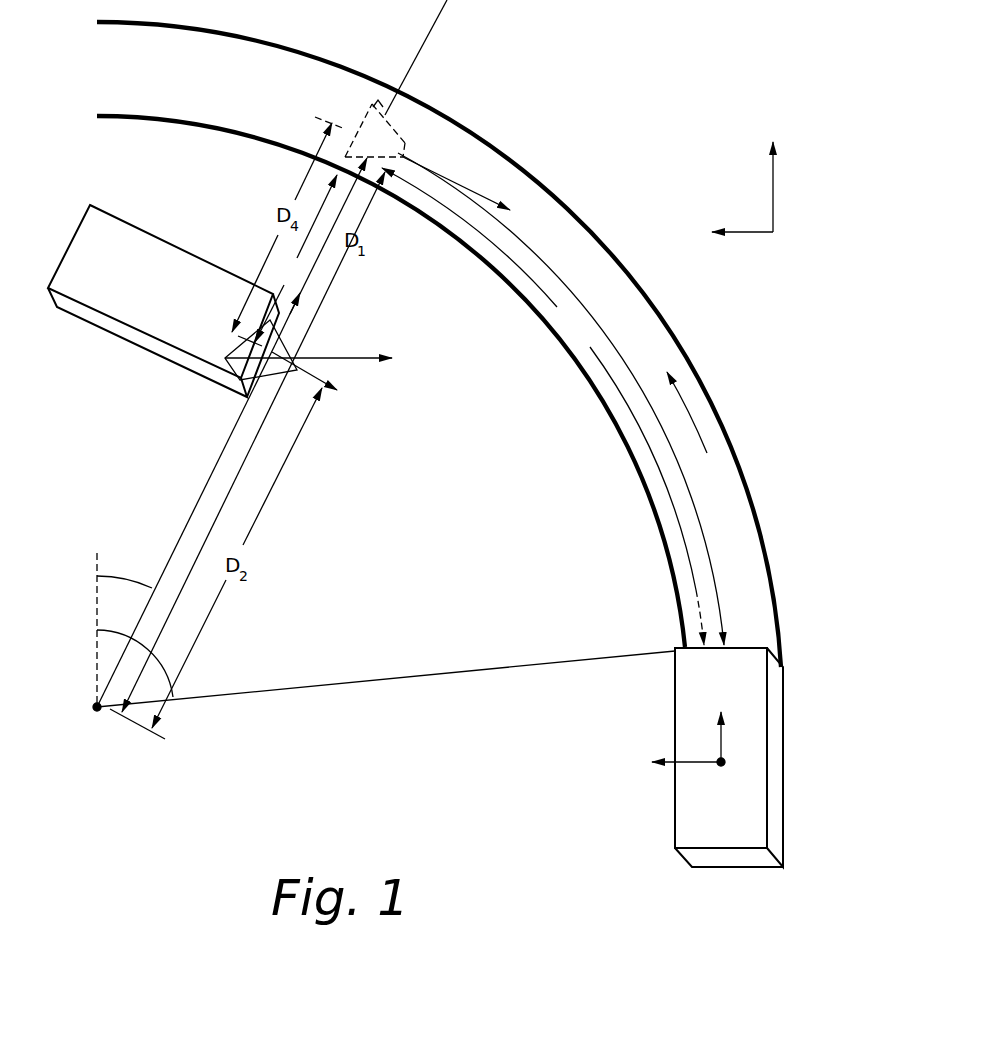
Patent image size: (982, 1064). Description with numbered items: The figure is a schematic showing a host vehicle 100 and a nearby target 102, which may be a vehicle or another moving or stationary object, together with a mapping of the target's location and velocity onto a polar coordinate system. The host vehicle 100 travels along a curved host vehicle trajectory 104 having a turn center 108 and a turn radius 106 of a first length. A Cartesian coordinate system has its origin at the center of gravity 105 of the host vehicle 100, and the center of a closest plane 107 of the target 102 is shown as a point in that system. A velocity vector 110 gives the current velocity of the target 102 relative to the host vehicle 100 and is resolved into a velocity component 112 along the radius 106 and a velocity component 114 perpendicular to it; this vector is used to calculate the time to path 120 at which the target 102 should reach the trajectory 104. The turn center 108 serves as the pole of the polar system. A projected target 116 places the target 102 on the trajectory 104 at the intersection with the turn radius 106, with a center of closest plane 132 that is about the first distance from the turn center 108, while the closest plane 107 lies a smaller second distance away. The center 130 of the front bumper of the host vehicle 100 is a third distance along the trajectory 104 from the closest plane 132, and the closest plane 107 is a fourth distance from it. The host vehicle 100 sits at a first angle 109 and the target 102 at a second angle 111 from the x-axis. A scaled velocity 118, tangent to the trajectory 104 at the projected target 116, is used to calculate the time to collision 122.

The host vehicle 100 is at (686, 830).
The target 102 is at (147, 243).
The host vehicle trajectory 104 is at (692, 418).
The center of gravity 105 is at (733, 763).
The turn radius 106 is at (209, 478).
The center of closest plane of the target 107 is at (224, 362).
The turn center 108 is at (95, 708).
The first angle 109 is at (168, 658).
The velocity vector 110 is at (356, 356).
The second angle 111 is at (125, 579).
The velocity component v_i 112 is at (304, 294).
The velocity component v_j 114 is at (312, 385).
The projected target 116 is at (375, 103).
The scaled velocity v_p 118 is at (490, 198).
The time to path 120 is at (320, 212).
The time to collision 122 is at (590, 312).
The center of front bumper 130 is at (728, 645).
The center of closest plane of the projected target 132 is at (405, 140).